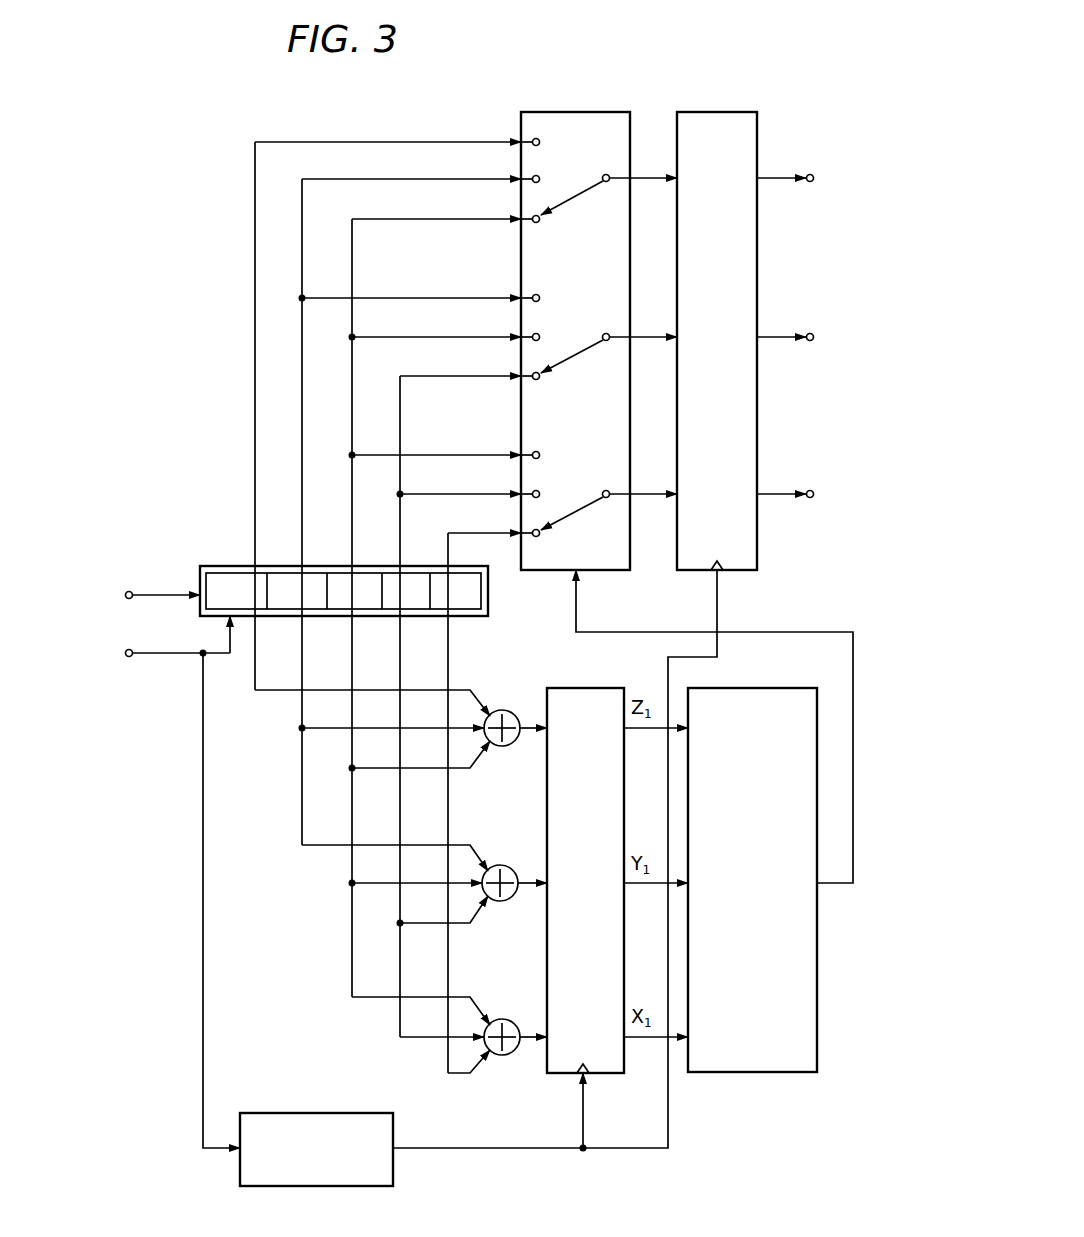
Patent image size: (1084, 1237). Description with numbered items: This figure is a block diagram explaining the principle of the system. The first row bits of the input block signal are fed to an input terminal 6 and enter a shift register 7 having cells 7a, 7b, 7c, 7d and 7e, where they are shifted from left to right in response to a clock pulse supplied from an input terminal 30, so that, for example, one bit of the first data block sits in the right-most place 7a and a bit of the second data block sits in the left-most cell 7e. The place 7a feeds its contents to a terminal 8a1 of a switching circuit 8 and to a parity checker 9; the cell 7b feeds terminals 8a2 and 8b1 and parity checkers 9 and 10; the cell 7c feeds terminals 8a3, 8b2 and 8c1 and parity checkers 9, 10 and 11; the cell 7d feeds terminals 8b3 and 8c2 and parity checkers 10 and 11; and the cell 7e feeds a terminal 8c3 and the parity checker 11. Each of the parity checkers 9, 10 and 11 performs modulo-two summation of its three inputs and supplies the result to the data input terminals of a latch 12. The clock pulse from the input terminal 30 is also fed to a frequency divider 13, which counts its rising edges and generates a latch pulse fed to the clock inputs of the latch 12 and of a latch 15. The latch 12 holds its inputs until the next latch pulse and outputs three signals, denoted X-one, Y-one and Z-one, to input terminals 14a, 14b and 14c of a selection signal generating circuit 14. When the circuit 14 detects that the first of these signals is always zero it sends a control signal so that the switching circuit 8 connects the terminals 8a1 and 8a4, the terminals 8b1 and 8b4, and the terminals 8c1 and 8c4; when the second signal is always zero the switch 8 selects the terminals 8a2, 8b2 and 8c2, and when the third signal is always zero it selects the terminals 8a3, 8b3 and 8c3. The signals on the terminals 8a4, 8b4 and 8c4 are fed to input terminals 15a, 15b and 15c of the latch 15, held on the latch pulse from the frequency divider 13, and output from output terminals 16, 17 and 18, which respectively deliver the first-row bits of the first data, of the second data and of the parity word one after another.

The input terminal 6 is at (129, 590).
The shift register 7 is at (222, 562).
The cell 7a is at (462, 573).
The cell 7b is at (412, 573).
The cell 7c is at (364, 573).
The cell 7d is at (314, 573).
The cell 7e is at (262, 573).
The switching circuit 8 is at (571, 112).
The terminal 8a1 is at (540, 536).
The terminal 8a2 is at (533, 497).
The terminal 8a3 is at (533, 452).
The terminal 8a4 is at (603, 491).
The terminal 8b1 is at (540, 379).
The terminal 8b2 is at (533, 340).
The terminal 8b3 is at (539, 295).
The terminal 8b4 is at (603, 334).
The terminal 8c1 is at (540, 222).
The terminal 8c2 is at (533, 182).
The terminal 8c3 is at (539, 139).
The terminal 8c4 is at (603, 175).
The parity checker 9 is at (510, 1019).
The parity checker 10 is at (505, 865).
The parity checker 11 is at (507, 710).
The latch 12 is at (568, 688).
The frequency divider 13 is at (320, 1113).
The selection signal generating circuit 14 is at (720, 902).
The input terminal 14a is at (676, 1036).
The input terminal 14b is at (676, 883).
The input terminal 14c is at (675, 728).
The latch 15 is at (708, 112).
The input terminal 15a is at (663, 493).
The input terminal 15b is at (663, 336).
The input terminal 15c is at (663, 177).
The output terminal 16 is at (812, 490).
The output terminal 17 is at (812, 332).
The output terminal 18 is at (813, 173).
The input terminal 30 is at (131, 650).